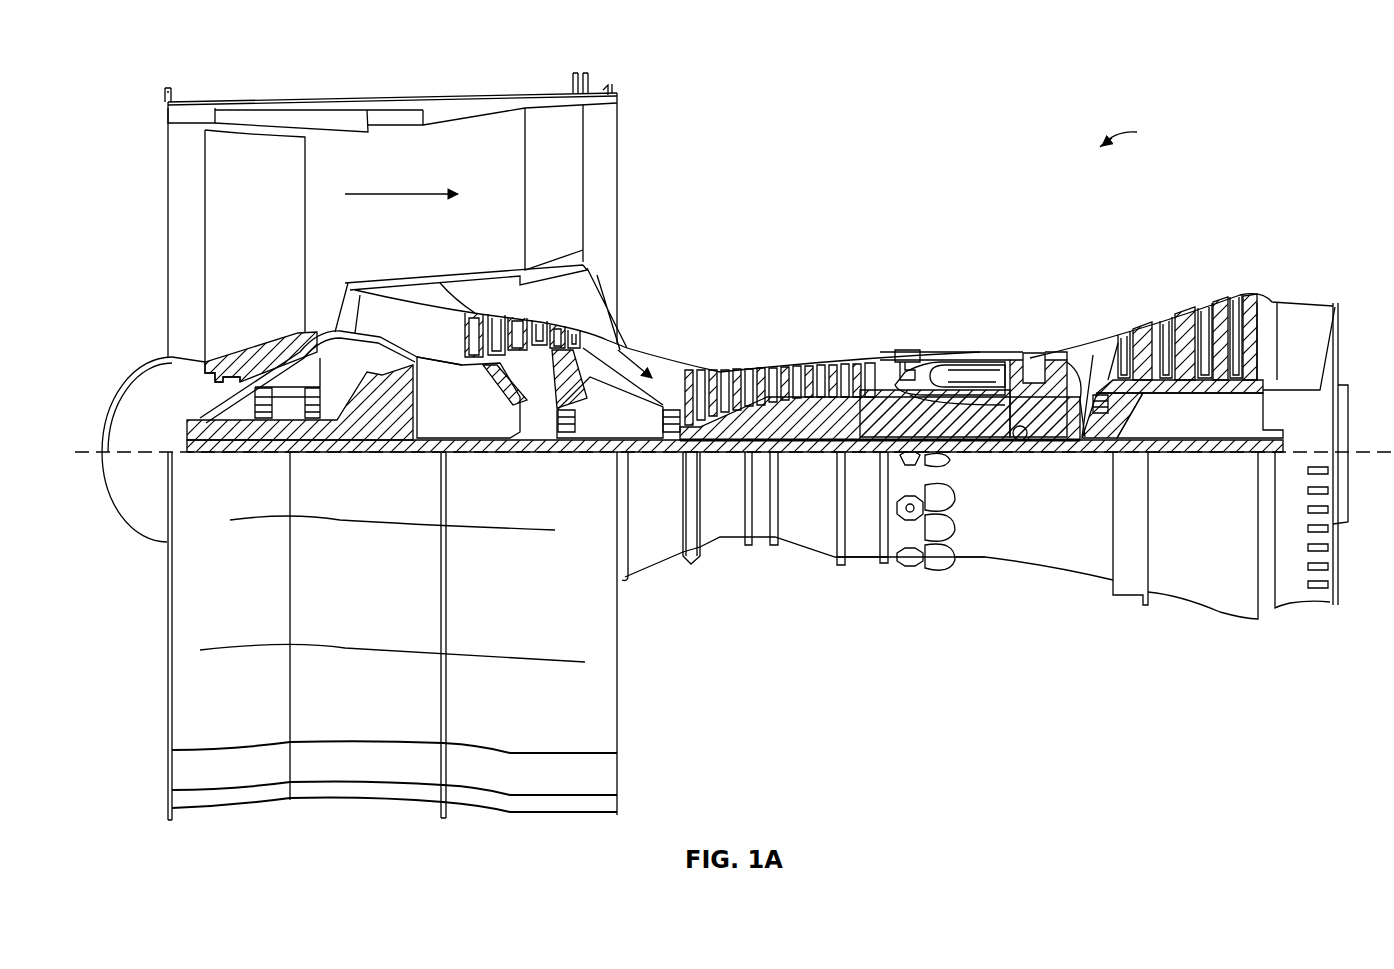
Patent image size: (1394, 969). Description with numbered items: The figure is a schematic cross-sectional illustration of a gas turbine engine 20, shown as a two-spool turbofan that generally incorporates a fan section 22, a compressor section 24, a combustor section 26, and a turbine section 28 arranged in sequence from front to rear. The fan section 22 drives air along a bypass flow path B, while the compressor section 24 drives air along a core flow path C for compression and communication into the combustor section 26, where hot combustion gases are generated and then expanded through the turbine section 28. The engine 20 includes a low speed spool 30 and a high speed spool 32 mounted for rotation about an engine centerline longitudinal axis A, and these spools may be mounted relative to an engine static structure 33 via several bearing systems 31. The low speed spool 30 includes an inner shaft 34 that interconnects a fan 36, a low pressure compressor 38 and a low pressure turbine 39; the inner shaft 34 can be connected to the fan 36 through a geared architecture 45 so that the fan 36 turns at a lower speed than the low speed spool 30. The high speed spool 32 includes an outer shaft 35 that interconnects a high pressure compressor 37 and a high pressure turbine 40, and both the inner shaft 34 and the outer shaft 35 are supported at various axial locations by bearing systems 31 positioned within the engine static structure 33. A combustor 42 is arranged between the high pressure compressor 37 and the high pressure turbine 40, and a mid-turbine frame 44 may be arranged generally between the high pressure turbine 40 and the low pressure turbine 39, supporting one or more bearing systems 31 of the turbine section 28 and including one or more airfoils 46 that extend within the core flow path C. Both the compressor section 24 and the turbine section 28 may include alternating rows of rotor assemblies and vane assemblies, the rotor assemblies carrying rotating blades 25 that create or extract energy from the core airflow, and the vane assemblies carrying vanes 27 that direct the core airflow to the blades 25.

The gas turbine engine 20 is at (1134, 132).
The fan section 22 is at (268, 92).
The compressor section 24 is at (849, 366).
The rotating blades 25 is at (470, 330).
The combustor section 26 is at (931, 359).
The vanes 27 is at (495, 352).
The turbine section 28 is at (1182, 319).
The low speed spool 30 is at (869, 544).
The bearing systems 31 is at (280, 418).
The high speed spool 32 is at (855, 415).
The engine static structure 33 is at (866, 562).
The inner shaft 34 is at (650, 455).
The outer shaft 35 is at (1020, 442).
The fan 36 is at (272, 226).
The high pressure compressor 37 is at (775, 420).
The low pressure compressor 38 is at (530, 330).
The low pressure turbine 39 is at (1197, 325).
The high pressure turbine 40 is at (1035, 350).
The combustor 42 is at (955, 380).
The mid-turbine frame 44 is at (1088, 345).
The geared architecture 45 is at (400, 432).
The airfoils 46 is at (1080, 365).
The engine centerline longitudinal axis A is at (1345, 447).
The bypass flow path B is at (410, 192).
The core flow path C is at (648, 375).